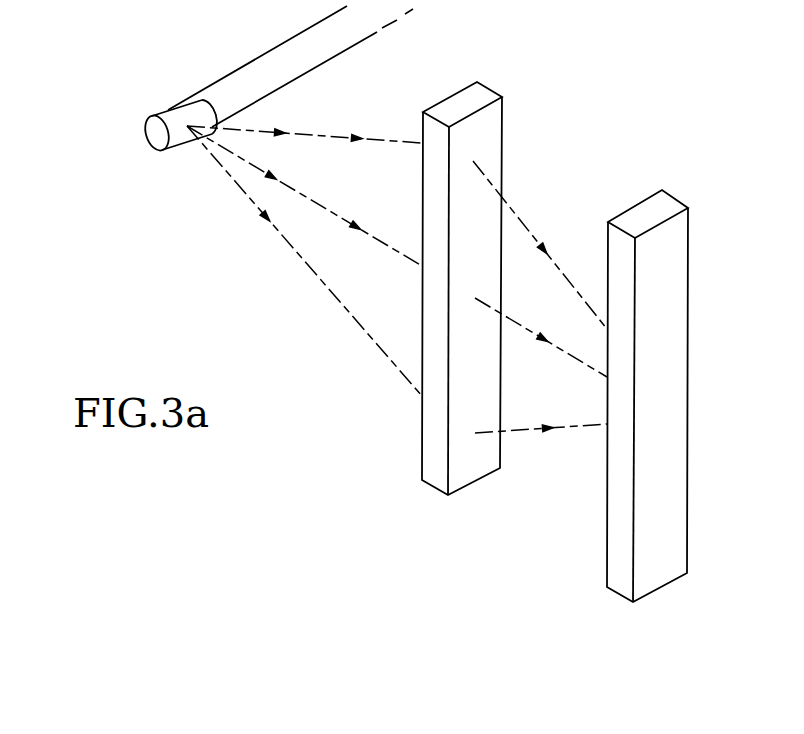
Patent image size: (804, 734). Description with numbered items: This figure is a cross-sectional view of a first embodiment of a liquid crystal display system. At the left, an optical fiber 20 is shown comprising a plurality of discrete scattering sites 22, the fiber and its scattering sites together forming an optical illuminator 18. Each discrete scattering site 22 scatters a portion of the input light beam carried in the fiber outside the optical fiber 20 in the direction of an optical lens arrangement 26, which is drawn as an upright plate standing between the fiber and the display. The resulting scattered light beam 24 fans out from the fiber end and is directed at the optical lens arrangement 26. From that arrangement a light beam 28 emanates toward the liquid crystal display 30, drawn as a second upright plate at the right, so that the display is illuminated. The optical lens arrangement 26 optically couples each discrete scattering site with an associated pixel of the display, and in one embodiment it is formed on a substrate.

The optical illuminator 18 is at (155, 152).
The optical fiber 20 is at (185, 102).
The discrete scattering site 22 is at (181, 143).
The scattered light beam 24 is at (300, 136).
The optical lens arrangement 26 is at (432, 470).
The light beam 28 is at (523, 221).
The liquid crystal display 30 is at (623, 580).